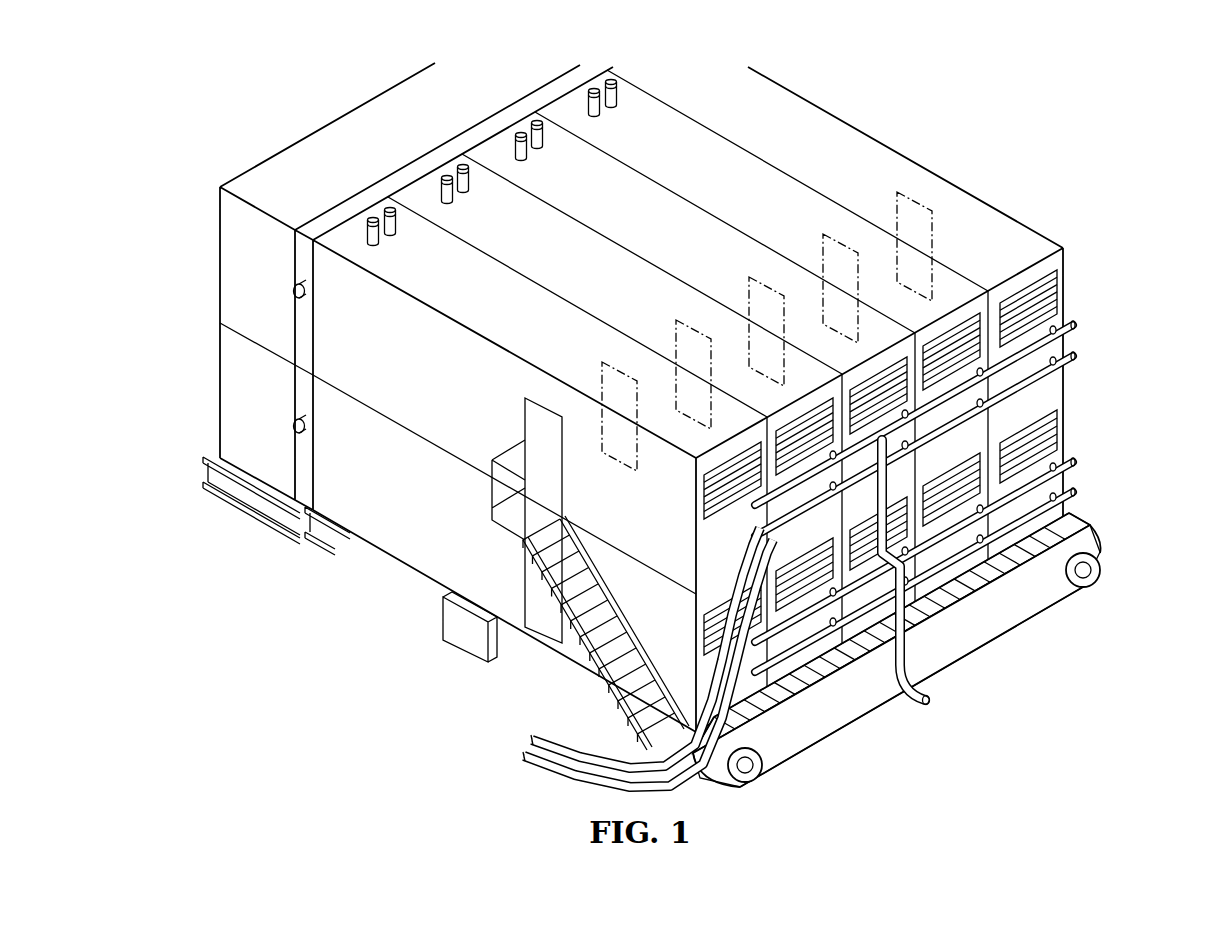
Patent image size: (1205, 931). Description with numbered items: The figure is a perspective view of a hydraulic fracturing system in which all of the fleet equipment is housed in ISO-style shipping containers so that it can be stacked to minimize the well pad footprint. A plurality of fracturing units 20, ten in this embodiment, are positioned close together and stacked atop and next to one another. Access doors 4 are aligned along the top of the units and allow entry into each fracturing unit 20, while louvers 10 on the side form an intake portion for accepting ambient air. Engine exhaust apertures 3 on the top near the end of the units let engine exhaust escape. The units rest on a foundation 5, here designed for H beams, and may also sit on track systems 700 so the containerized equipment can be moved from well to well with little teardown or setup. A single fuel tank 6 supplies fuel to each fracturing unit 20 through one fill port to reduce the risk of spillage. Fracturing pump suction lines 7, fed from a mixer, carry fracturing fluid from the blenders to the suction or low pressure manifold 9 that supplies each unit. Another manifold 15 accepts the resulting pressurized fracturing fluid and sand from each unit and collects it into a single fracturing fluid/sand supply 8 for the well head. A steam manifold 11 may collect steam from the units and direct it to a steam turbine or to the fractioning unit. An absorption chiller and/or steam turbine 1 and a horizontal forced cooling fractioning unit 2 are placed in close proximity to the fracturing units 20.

The absorption chiller and/or steam turbine 1 is at (247, 243).
The horizontal forced cooling fractioning unit 2 is at (247, 380).
The engine exhaust apertures 3 is at (443, 175).
The access doors 4 is at (630, 372).
The foundation 5 is at (300, 545).
The fuel tank 6 is at (448, 650).
The fracturing pump suction lines 7 is at (525, 733).
The fracturing fluid/sand supply 8 is at (927, 690).
The suction or low pressure (LP) manifold 9 is at (770, 523).
The louvers 10 is at (788, 447).
The steam manifold 11 is at (287, 288).
The manifold 15 is at (1077, 318).
The fracturing units 20 is at (952, 292).
The track systems 700 is at (1075, 537).